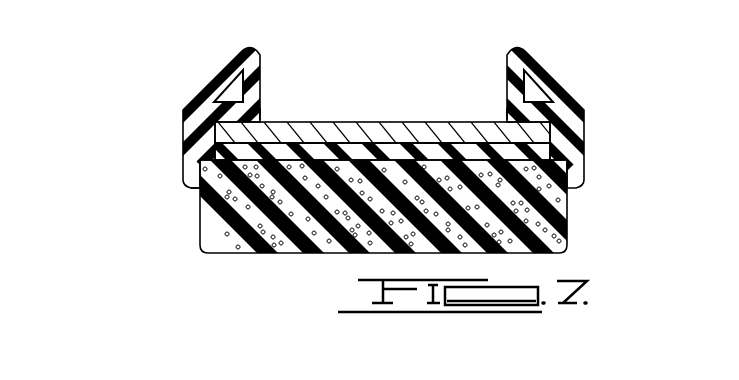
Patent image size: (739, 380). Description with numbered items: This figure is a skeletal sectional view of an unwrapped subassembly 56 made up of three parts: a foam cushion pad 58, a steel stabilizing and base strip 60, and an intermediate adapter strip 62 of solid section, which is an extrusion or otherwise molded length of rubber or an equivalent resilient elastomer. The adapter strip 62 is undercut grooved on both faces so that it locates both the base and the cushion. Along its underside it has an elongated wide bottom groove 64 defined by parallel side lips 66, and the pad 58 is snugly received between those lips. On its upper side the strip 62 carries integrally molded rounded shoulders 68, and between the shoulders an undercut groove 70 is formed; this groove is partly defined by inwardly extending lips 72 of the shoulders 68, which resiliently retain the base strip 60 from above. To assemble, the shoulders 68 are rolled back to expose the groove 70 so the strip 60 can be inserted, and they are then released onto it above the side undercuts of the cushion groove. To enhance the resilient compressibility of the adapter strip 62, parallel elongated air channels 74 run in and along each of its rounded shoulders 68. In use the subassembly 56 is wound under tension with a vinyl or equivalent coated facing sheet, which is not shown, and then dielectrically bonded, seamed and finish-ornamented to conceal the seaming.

The subassembly 56 is at (124, 109).
The foam cushion pad 58 is at (198, 240).
The steel stabilizing and base strip 60 is at (325, 121).
The intermediate adapter strip 62 is at (182, 138).
The bottom groove 64 is at (242, 161).
The side lips 66 is at (190, 185).
The shoulders 68 is at (240, 54).
The undercut groove 70 is at (368, 145).
The lips 72 is at (260, 109).
The air channels 74 is at (235, 92).